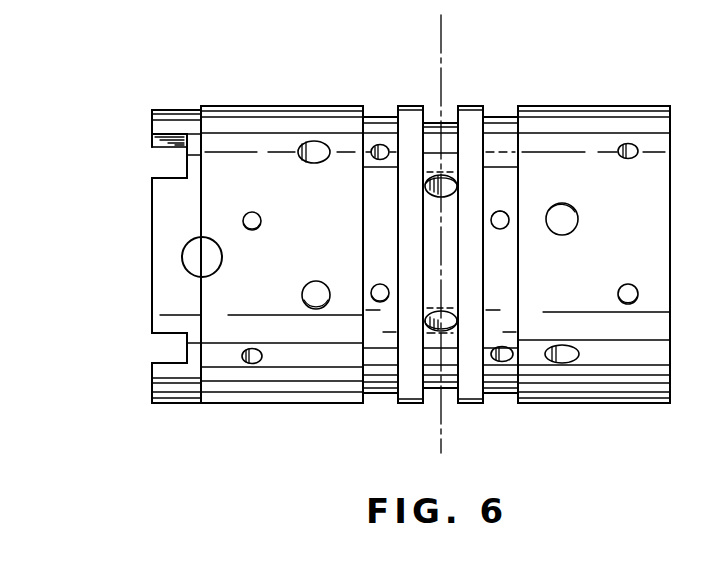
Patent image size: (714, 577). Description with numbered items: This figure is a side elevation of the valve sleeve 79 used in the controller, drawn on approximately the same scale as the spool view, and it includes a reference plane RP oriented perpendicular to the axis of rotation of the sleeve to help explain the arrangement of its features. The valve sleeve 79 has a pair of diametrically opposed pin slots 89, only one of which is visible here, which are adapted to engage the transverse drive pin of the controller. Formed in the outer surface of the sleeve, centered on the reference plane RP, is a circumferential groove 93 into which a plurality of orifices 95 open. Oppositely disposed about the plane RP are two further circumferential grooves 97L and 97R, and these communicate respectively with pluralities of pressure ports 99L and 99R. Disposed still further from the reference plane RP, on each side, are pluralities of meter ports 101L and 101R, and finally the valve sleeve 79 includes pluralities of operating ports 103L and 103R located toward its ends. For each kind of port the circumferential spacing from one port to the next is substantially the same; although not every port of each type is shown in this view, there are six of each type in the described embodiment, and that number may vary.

The valve sleeve 79 is at (150, 146).
The pin slot 89 is at (181, 256).
The circumferential groove 93 is at (445, 122).
The orifices 95 is at (427, 188).
The circumferential groove 97L is at (379, 117).
The circumferential groove 97R is at (507, 117).
The pressure ports 99L is at (372, 158).
The pressure ports 99R is at (505, 229).
The meter ports 101L is at (301, 158).
The meter ports 101R is at (570, 186).
The operating ports 103L is at (258, 227).
The operating ports 103R is at (619, 289).
The reference plane RP is at (443, 49).